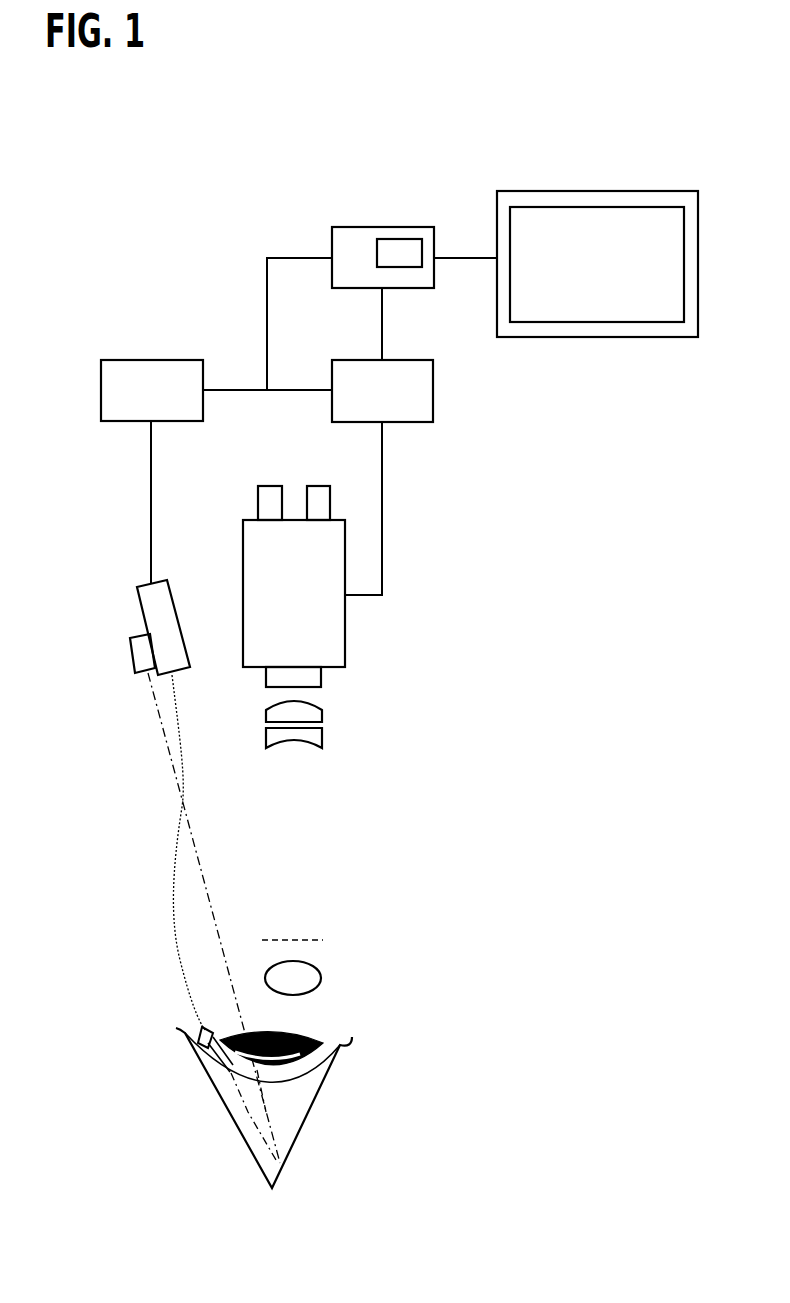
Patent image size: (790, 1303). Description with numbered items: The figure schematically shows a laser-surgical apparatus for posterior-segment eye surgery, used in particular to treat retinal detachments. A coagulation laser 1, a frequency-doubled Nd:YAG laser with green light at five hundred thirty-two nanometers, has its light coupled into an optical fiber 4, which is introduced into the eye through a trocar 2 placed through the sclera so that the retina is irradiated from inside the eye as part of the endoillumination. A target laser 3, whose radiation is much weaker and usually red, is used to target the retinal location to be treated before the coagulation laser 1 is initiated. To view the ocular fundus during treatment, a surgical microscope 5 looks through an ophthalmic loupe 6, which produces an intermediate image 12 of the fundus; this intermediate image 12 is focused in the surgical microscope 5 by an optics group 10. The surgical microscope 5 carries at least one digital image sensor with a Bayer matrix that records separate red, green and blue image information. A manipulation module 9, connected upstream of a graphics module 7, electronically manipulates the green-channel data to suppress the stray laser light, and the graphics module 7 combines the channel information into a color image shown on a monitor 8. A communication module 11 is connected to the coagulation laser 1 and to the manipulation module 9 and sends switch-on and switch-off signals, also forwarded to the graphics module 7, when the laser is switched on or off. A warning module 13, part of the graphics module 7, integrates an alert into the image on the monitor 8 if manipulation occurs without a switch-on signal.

The coagulation laser 1 is at (137, 600).
The trocar 2 is at (200, 1032).
The target laser 3 is at (130, 650).
The optical fiber 4 is at (177, 950).
The surgical microscope 5 is at (345, 626).
The ophthalmic loupe 6 is at (322, 978).
The graphics module 7 is at (355, 227).
The monitor 8 is at (604, 191).
The manipulation module 9 is at (434, 388).
The optics group 10 is at (342, 697).
The communication module 11 is at (151, 360).
The intermediate image 12 is at (310, 938).
The warning module 13 is at (400, 239).